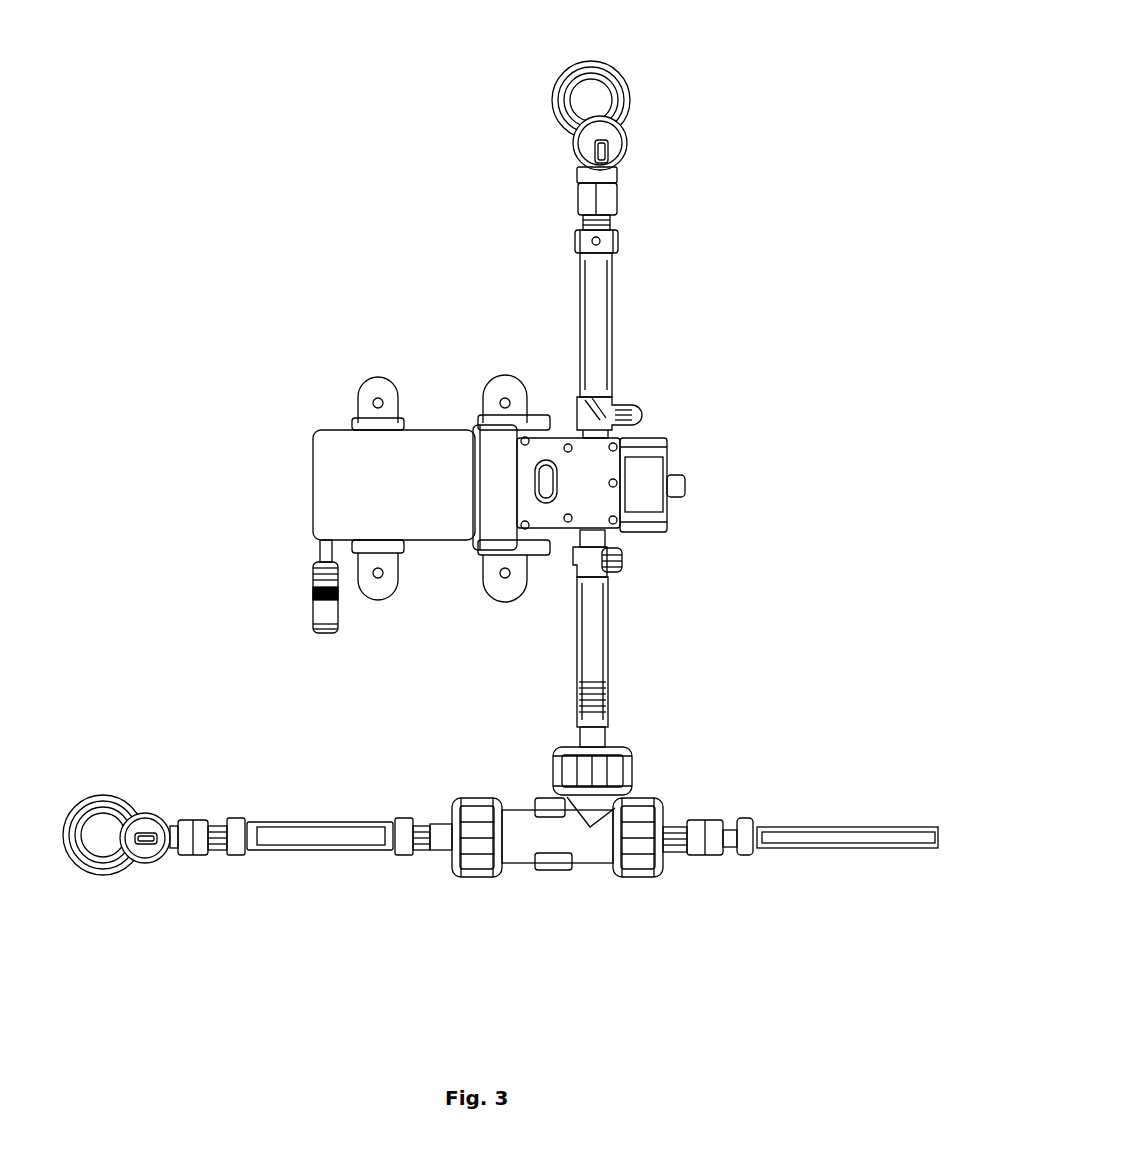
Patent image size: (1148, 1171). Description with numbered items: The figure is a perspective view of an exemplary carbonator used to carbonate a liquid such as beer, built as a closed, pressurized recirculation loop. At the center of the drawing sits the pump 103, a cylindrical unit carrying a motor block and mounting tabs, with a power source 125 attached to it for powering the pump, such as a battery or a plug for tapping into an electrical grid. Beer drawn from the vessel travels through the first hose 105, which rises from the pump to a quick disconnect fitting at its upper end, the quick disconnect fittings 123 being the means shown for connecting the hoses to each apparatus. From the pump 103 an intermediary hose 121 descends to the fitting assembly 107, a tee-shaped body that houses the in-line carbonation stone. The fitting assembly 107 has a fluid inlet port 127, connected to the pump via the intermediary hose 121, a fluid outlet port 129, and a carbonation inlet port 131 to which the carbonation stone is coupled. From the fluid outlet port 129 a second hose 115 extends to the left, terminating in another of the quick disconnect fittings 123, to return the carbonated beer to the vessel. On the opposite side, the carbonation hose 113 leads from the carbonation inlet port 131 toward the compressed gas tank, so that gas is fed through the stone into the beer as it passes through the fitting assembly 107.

The pump 103 is at (410, 462).
The first hose 105 is at (612, 327).
The fitting assembly 107 is at (571, 830).
The carbonation hose 113 is at (786, 828).
The second hose 115 is at (320, 822).
The intermediary hose 121 is at (607, 636).
The quick disconnect fittings 123 is at (637, 90).
The power source 125 is at (313, 598).
The fluid inlet port 127 is at (632, 753).
The fluid outlet port 129 is at (477, 872).
The carbonation inlet port 131 is at (657, 872).